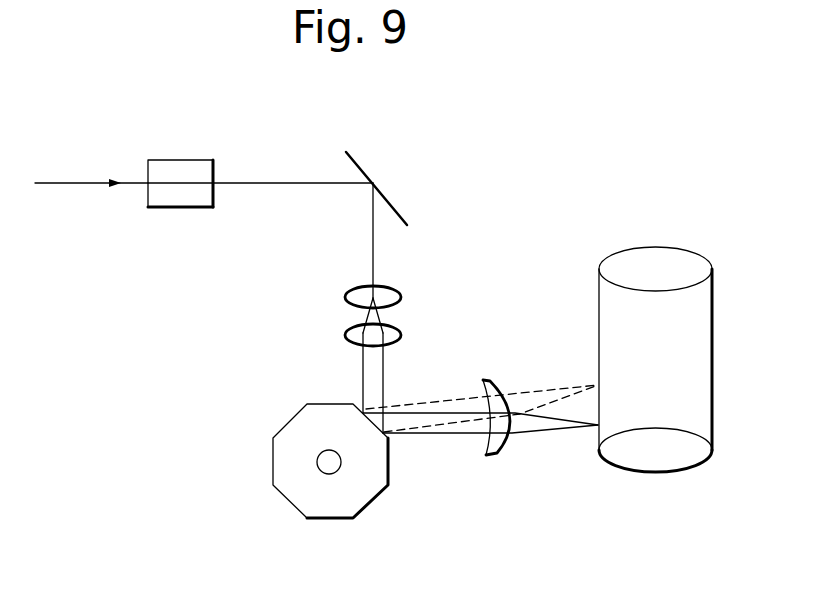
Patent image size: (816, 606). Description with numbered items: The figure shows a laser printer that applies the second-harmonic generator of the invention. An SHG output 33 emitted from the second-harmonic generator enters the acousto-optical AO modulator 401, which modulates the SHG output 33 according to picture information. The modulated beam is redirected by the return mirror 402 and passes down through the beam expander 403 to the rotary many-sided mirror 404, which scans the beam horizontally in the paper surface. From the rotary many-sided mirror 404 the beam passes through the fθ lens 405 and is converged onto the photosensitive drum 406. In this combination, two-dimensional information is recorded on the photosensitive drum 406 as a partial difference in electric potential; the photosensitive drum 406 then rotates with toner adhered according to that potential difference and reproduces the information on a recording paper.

The SHG output 33 is at (62, 187).
The AO modulator 401 is at (177, 168).
The return mirror 402 is at (390, 200).
The beam expander 403 is at (348, 326).
The rotary many-sided mirror 404 is at (282, 461).
The fθ lens 405 is at (492, 378).
The photosensitive drum 406 is at (657, 460).